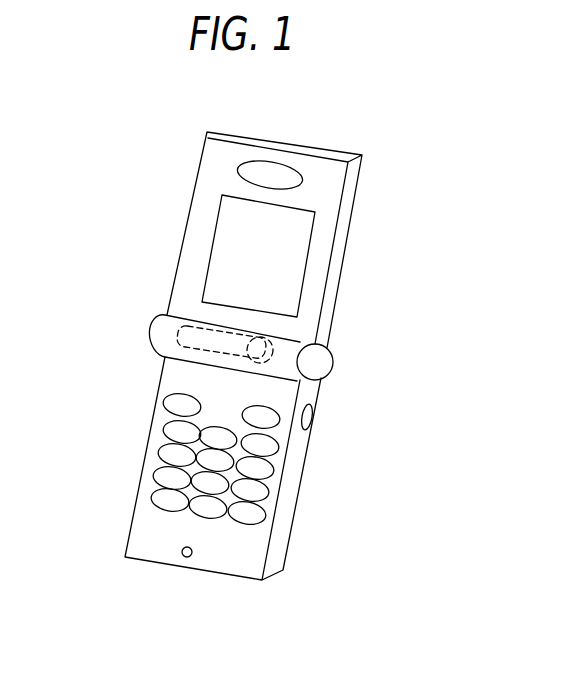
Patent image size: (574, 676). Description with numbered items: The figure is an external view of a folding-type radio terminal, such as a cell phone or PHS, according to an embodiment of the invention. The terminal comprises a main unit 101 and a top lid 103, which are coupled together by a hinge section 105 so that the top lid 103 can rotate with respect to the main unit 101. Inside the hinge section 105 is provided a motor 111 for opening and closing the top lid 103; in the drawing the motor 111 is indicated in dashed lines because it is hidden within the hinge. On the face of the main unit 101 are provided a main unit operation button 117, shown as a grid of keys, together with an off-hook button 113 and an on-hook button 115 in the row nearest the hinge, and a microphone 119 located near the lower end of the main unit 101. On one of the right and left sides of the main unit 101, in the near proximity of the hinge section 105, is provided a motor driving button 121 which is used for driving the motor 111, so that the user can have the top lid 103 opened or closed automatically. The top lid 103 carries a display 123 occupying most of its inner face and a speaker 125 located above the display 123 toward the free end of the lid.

The main unit 101 is at (278, 552).
The top lid 103 is at (350, 185).
The hinge section 105 is at (330, 362).
The motor 111 is at (175, 332).
The off-hook button 113 is at (167, 405).
The on-hook button 115 is at (273, 423).
The operation button 117 is at (137, 471).
The microphone 119 is at (183, 558).
The motor driving button 121 is at (318, 410).
The display 123 is at (220, 232).
The speaker 125 is at (263, 163).